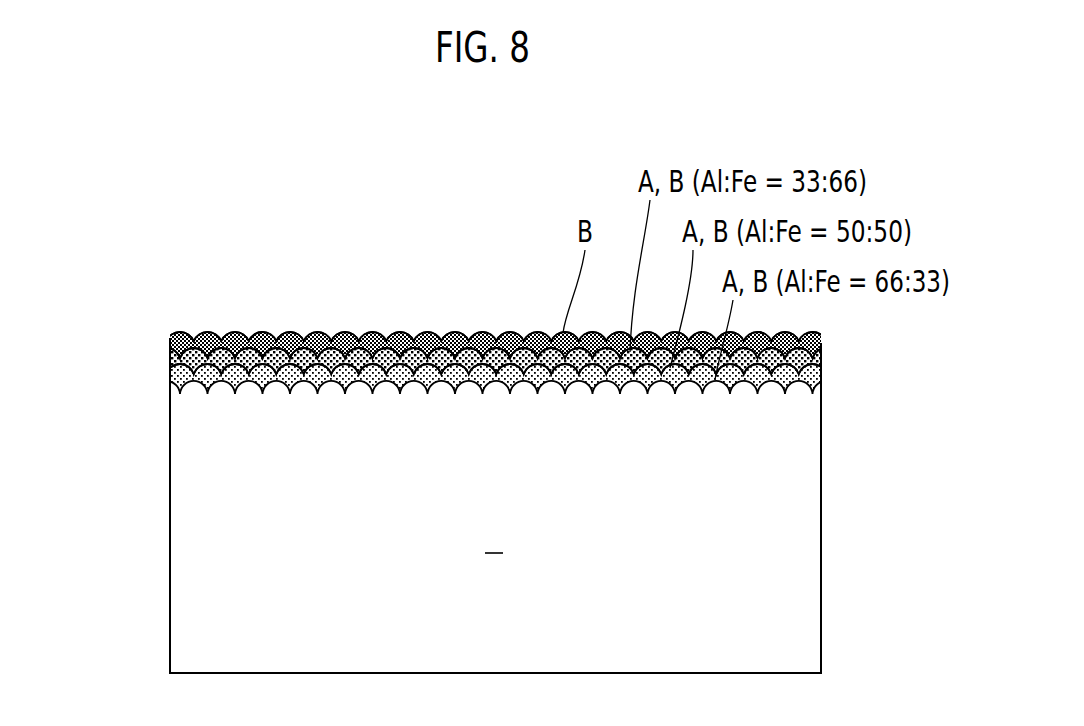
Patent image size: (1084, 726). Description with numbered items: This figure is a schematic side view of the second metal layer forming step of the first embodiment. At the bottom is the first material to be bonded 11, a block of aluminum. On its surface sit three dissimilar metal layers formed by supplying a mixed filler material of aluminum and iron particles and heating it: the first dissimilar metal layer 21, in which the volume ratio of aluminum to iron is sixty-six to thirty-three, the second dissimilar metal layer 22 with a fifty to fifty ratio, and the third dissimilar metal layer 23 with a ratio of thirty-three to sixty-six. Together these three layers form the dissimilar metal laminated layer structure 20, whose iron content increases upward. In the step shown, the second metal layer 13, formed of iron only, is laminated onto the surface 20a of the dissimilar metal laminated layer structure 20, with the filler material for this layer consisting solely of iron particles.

The first material to be bonded 11 is at (831, 518).
The second metal layer 13 is at (366, 318).
The dissimilar metal laminated layer structure 20 is at (832, 345).
The surface of the dissimilar metal laminated layer structure 20a is at (483, 347).
The first dissimilar metal layer 21 is at (195, 380).
The second dissimilar metal layer 22 is at (207, 365).
The third dissimilar metal layer 23 is at (222, 355).